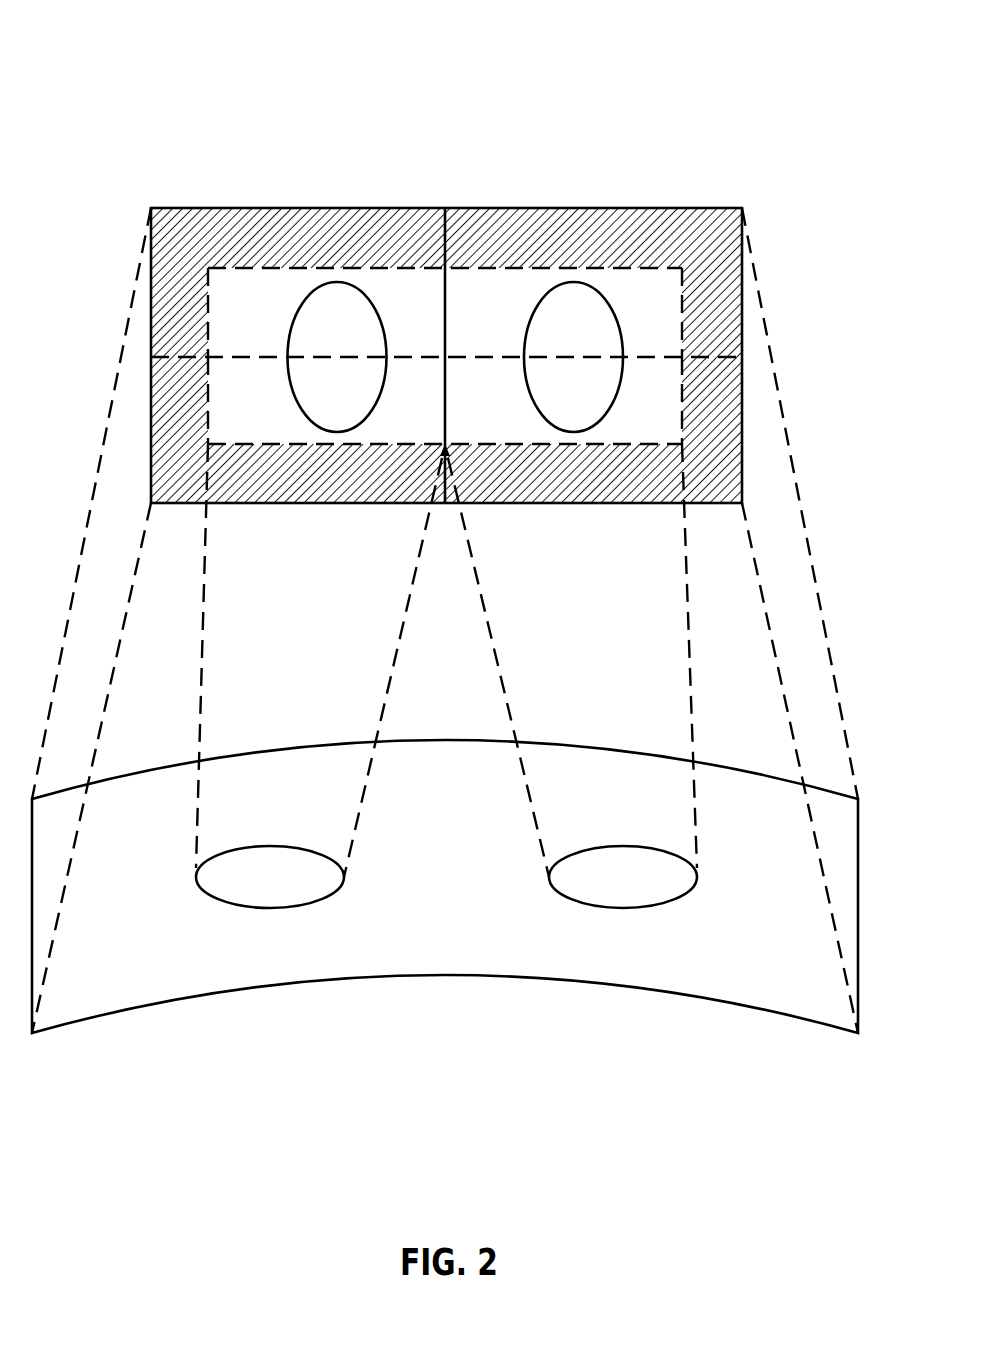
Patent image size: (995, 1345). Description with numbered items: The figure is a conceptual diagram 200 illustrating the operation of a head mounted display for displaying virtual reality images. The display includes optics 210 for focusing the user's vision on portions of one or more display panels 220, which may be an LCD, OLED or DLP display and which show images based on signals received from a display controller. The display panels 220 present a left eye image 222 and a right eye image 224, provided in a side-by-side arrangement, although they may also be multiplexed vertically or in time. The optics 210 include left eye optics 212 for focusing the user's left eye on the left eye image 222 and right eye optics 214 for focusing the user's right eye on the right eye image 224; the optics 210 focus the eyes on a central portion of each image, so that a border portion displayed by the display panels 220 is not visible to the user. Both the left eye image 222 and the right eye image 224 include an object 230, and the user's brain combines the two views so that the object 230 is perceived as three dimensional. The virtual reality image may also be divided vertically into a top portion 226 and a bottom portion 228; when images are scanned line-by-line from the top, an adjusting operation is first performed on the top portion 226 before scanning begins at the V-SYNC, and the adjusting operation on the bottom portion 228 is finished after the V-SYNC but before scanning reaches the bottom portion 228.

The conceptual diagram 200 is at (137, 56).
The optics 210 is at (457, 976).
The left eye optics 212 is at (285, 908).
The right eye optics 214 is at (638, 908).
The display panels 220 is at (497, 202).
The left eye image 222 is at (269, 240).
The right eye image 224 is at (608, 237).
The top portion 226 is at (734, 318).
The bottom portion 228 is at (734, 378).
The object 230 is at (345, 298).